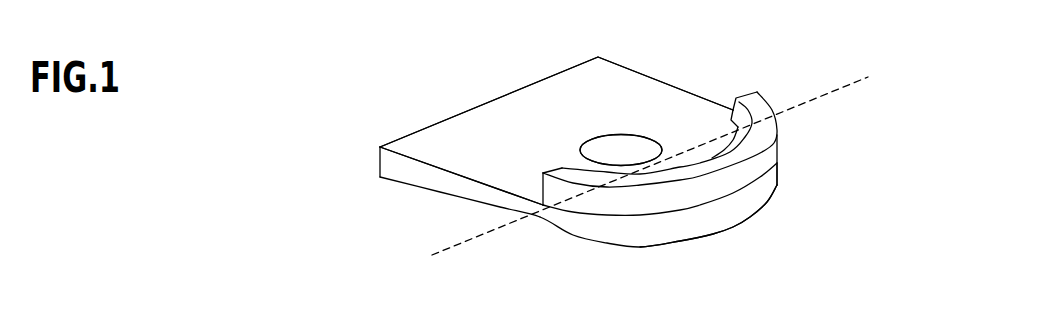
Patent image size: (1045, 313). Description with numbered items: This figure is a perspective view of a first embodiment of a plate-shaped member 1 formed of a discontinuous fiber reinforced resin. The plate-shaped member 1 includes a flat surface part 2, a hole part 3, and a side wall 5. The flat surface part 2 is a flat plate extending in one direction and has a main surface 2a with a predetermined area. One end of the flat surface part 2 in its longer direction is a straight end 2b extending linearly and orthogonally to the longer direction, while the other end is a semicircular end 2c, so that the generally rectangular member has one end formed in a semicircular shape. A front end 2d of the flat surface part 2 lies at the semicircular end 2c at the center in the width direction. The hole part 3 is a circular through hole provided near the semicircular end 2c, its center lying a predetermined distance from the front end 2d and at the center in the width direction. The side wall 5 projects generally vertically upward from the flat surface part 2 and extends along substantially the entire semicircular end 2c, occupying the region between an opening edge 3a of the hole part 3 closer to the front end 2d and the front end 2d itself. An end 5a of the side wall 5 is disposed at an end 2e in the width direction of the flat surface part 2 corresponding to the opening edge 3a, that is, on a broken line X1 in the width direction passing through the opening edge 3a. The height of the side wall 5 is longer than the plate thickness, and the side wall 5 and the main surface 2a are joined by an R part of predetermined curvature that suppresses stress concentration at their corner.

The plate-shaped member 1 is at (832, 58).
The flat surface part 2 is at (655, 78).
The main surface 2a is at (575, 102).
The straight end 2b is at (480, 105).
The semicircular end 2c is at (648, 233).
The front end 2d is at (722, 218).
The end in the width direction 2e is at (458, 177).
The hole part 3 is at (617, 152).
The opening edge 3a is at (648, 142).
The side wall 5 is at (768, 155).
The end of the side wall 5a is at (738, 100).
The broken line X1 is at (835, 90).